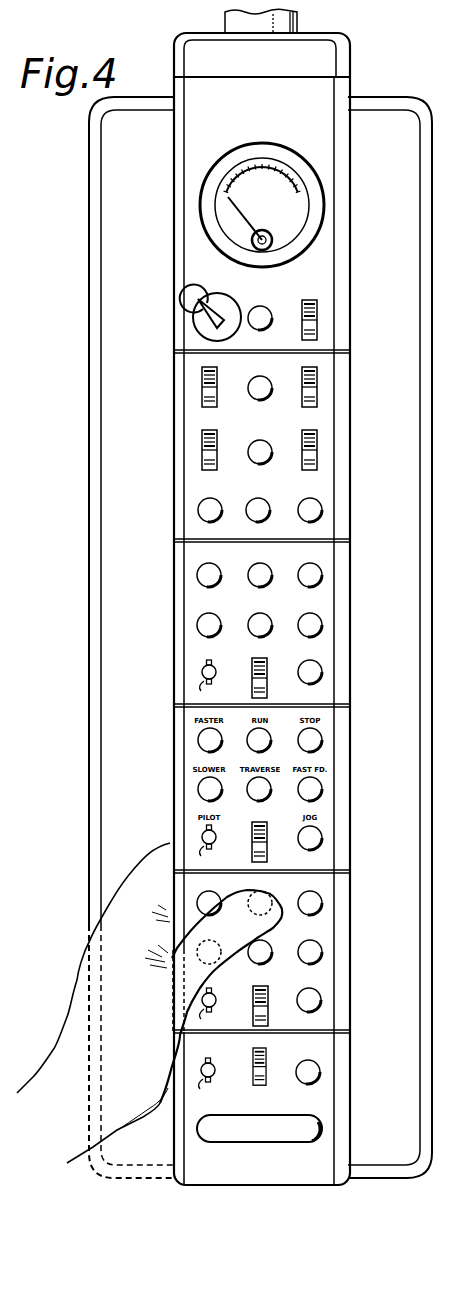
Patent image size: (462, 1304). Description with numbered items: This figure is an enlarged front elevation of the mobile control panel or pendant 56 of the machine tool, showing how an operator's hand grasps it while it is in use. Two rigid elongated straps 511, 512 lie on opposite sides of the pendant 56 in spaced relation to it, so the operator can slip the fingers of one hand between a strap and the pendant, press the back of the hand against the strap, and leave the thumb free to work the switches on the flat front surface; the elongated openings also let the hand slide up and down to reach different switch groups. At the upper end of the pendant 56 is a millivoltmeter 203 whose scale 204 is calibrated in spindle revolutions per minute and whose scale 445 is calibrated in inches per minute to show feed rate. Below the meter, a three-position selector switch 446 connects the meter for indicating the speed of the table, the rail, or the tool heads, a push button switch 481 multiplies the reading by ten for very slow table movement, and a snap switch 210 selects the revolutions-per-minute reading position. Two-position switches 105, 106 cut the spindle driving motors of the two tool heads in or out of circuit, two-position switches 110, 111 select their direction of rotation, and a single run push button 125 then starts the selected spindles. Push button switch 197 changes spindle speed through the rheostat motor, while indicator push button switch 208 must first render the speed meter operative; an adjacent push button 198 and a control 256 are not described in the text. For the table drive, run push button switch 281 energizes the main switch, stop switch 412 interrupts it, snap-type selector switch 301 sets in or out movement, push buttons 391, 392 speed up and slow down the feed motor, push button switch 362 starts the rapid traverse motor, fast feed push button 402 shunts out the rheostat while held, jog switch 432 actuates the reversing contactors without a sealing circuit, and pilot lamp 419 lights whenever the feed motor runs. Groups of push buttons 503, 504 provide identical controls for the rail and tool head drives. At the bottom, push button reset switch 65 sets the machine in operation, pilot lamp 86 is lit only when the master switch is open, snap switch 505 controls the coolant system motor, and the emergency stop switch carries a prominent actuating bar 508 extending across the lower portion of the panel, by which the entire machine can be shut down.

The pendant 56 is at (358, 67).
The strap 511 is at (92, 268).
The strap 512 is at (428, 246).
The millivoltmeter 203 is at (285, 151).
The scale 204 is at (291, 181).
The scale 445 is at (279, 197).
The selector switch 446 is at (196, 323).
The push button switch 481 is at (260, 328).
The scale selector switch 210 is at (318, 326).
The two-position switch 111 is at (202, 371).
The ram adjust knob 256 is at (262, 397).
The two-position switch 105 is at (318, 391).
The two-position switch 110 is at (202, 434).
The indicator push button switch 208 is at (262, 461).
The two-position switch 106 is at (318, 452).
The push button switch 197 is at (208, 518).
The spindle slower button 198 is at (254, 518).
The run push button 125 is at (306, 518).
The group of push buttons 503 is at (352, 601).
The push button switch 391 is at (204, 740).
The run push button switch 281 is at (255, 744).
The stop switch 412 is at (319, 740).
The push button switch 392 is at (214, 795).
The push button switch 362 is at (262, 796).
The fast feed push button 402 is at (319, 790).
The pilot lamp 419 is at (209, 845).
The selector switch 301 is at (253, 844).
The jog switch 432 is at (319, 840).
The group of push buttons 504 is at (352, 951).
The pilot lamp 86 is at (206, 1081).
The snap switch 505 is at (253, 1068).
The push button reset switch 65 is at (319, 1068).
The actuating bar 508 is at (300, 1119).